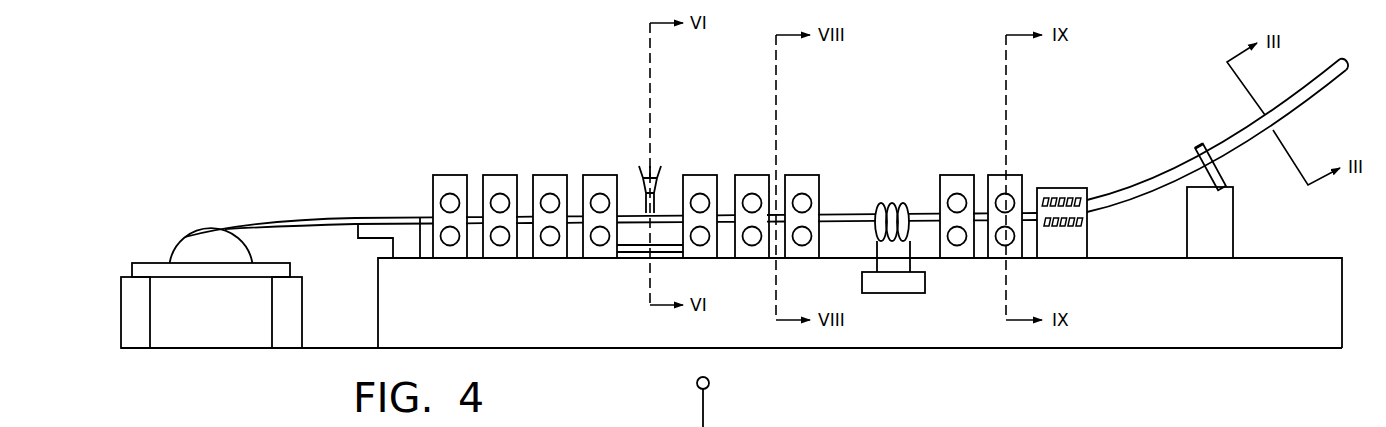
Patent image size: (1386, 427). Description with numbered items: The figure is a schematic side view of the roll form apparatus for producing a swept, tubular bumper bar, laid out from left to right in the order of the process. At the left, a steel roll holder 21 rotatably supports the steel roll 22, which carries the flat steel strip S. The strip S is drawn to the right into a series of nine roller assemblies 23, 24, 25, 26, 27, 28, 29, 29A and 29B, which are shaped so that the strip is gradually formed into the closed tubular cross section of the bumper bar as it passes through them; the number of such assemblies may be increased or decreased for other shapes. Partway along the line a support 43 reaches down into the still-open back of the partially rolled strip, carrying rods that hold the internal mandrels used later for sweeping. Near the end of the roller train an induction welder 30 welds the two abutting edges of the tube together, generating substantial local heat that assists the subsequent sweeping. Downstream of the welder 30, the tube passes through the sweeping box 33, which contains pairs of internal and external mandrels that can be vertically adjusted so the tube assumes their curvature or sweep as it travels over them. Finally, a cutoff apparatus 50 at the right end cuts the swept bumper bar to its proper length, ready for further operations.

The steel roll holder 21 is at (194, 328).
The steel roll 22 is at (198, 248).
The flat steel strip S is at (303, 217).
The roller assembly 23 is at (450, 172).
The roller assembly 24 is at (500, 172).
The roller assembly 25 is at (550, 172).
The roller assembly 26 is at (600, 172).
The roller assembly 27 is at (702, 172).
The roller assembly 28 is at (753, 172).
The roller assembly 29 is at (802, 172).
The roller assembly 29A is at (955, 172).
The roller assembly 29B is at (998, 172).
The induction welder 30 is at (884, 201).
The sweeping box 33 is at (1062, 187).
The support 43 is at (640, 163).
The cutoff apparatus 50 is at (1228, 173).